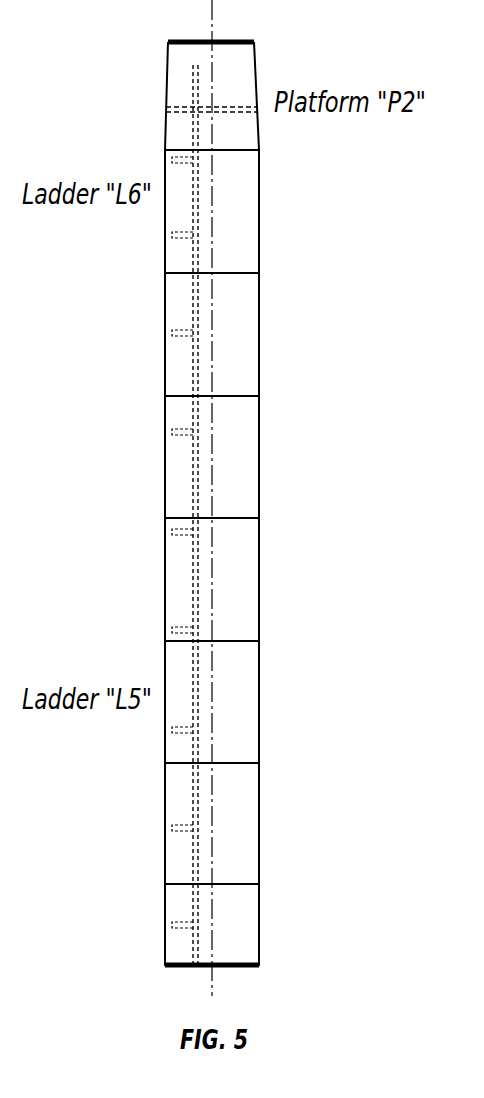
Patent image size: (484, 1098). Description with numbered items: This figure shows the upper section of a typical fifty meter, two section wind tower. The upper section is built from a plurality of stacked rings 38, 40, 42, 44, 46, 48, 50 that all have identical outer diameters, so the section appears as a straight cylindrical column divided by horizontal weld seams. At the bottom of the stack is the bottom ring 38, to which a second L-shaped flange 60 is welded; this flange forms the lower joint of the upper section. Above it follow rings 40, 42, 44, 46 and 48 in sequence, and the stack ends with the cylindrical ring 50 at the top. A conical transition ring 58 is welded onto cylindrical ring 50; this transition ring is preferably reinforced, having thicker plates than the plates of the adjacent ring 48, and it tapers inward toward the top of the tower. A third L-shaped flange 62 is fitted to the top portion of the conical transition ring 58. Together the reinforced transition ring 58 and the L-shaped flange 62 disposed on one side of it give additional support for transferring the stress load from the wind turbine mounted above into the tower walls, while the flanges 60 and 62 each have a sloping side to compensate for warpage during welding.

The bottom ring 38 is at (259, 924).
The ring 40 is at (259, 822).
The ring 42 is at (259, 702).
The ring 44 is at (259, 579).
The ring 46 is at (259, 455).
The ring 48 is at (259, 334).
The cylindrical ring 50 is at (259, 212).
The conical transition ring 58 is at (168, 97).
The second L-shaped flange 60 is at (242, 966).
The third L-shaped flange 62 is at (236, 41).